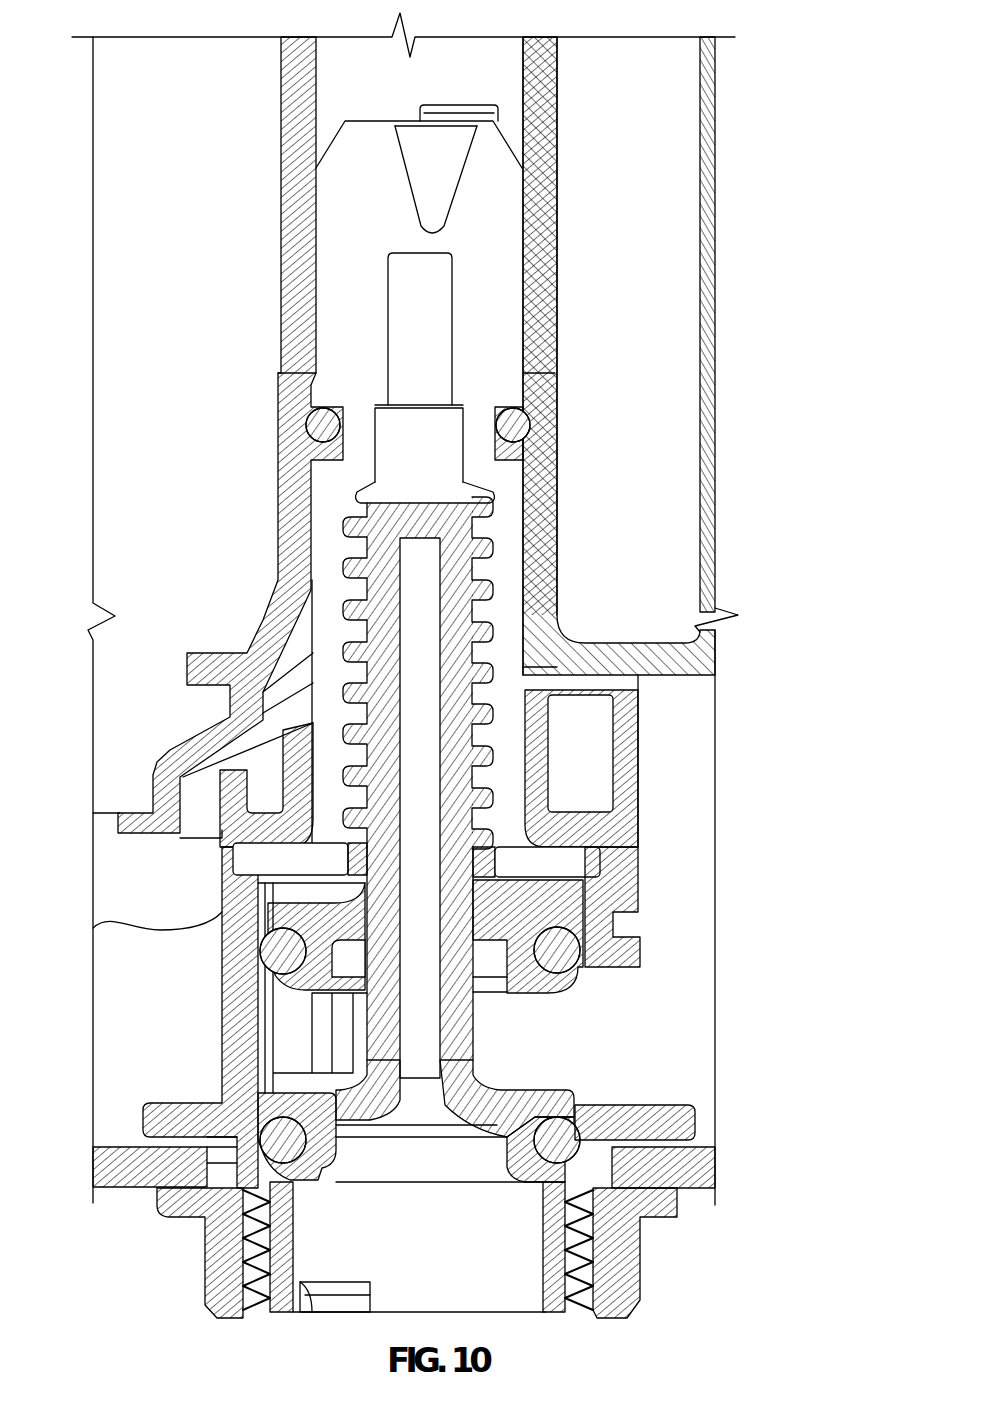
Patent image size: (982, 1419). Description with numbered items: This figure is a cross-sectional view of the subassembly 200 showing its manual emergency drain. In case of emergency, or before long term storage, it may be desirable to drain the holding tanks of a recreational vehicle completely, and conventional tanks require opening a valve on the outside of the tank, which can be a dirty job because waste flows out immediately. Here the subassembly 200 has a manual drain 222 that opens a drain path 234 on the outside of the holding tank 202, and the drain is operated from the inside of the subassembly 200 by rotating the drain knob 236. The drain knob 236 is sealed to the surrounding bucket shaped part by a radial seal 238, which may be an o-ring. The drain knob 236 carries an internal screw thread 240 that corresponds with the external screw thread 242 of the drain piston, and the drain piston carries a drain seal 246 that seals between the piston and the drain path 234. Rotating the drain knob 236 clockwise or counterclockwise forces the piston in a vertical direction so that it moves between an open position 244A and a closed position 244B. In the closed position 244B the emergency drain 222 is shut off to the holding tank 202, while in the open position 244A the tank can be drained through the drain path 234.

The manual drain 222 is at (178, 411).
The subassembly 200 is at (658, 661).
The drain knob 236 is at (490, 278).
The radial seal 238 is at (517, 427).
The internal screw thread 240 is at (489, 773).
The external screw thread 242 is at (489, 753).
The open position 244A is at (524, 918).
The drain path 234 is at (670, 1025).
The closed position 244B is at (524, 1103).
The drain seal 246 is at (554, 1140).
The holding tank 202 is at (686, 1177).